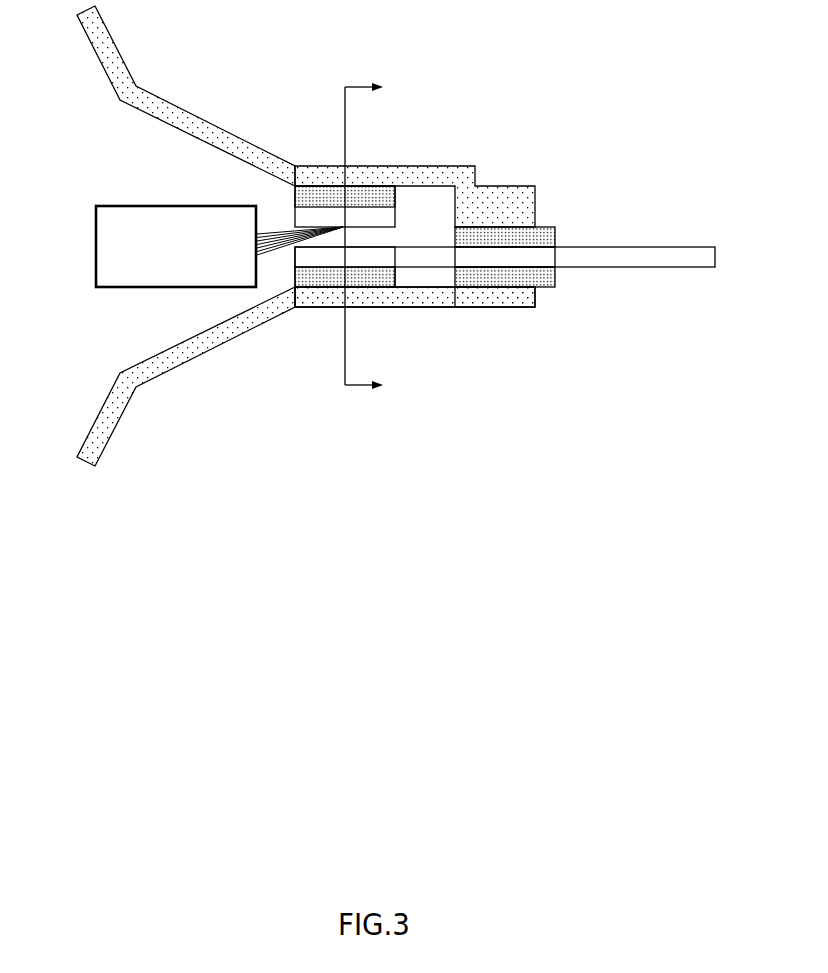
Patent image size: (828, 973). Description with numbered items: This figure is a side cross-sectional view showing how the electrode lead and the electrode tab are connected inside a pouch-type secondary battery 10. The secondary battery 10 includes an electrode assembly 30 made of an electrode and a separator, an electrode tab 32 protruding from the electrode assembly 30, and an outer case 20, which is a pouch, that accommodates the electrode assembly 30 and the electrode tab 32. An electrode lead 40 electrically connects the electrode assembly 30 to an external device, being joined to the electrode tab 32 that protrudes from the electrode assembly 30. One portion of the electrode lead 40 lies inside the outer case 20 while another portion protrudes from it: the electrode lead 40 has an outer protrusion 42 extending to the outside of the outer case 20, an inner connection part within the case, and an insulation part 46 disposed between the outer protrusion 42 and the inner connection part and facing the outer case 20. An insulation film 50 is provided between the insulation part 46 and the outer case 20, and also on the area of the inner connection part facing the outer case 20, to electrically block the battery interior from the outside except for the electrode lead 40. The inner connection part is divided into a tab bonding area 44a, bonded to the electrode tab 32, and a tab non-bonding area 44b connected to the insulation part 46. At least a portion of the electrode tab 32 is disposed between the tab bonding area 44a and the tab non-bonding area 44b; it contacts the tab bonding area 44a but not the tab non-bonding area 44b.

The secondary battery 10 is at (470, 86).
The outer case 20 is at (99, 60).
The electrode assembly 30 is at (95, 246).
The electrode tab 32 is at (270, 266).
The electrode lead 40 is at (623, 301).
The outer protrusion 42 is at (672, 256).
The tab bonding area 44a is at (316, 214).
The tab non-bonding area 44b is at (315, 260).
The insulation part 46 is at (533, 258).
The insulation film 50 is at (376, 196).